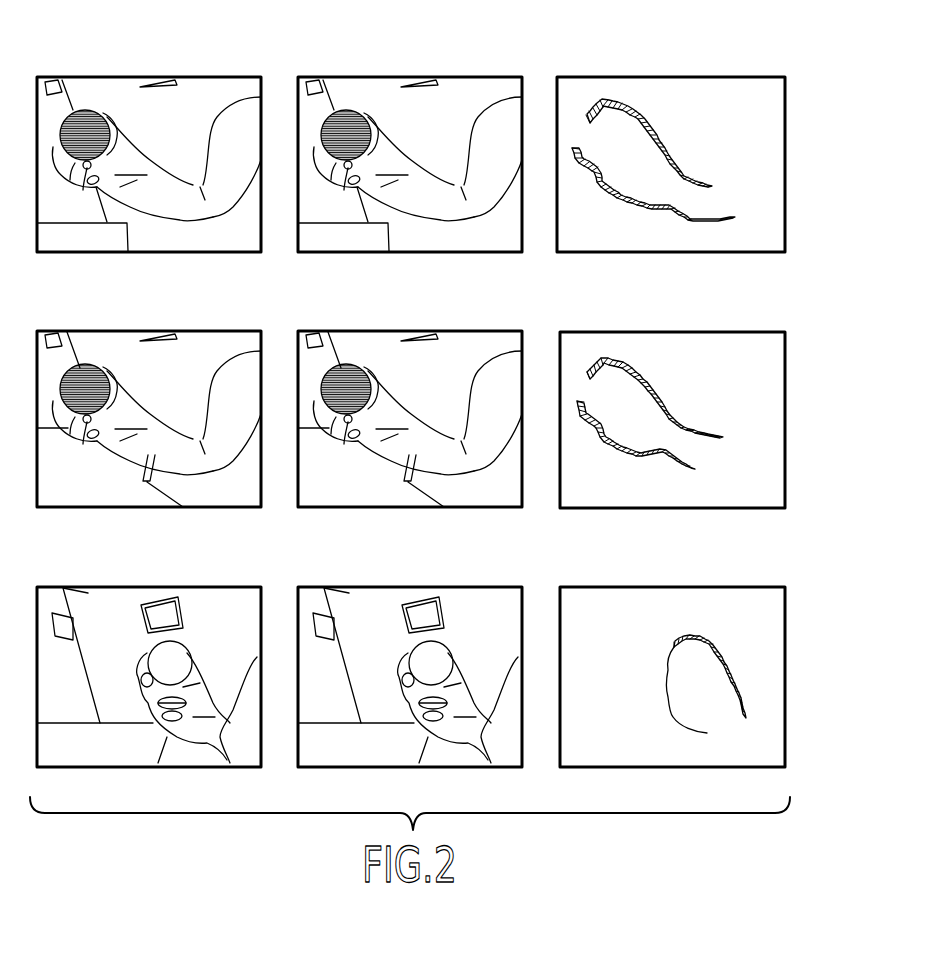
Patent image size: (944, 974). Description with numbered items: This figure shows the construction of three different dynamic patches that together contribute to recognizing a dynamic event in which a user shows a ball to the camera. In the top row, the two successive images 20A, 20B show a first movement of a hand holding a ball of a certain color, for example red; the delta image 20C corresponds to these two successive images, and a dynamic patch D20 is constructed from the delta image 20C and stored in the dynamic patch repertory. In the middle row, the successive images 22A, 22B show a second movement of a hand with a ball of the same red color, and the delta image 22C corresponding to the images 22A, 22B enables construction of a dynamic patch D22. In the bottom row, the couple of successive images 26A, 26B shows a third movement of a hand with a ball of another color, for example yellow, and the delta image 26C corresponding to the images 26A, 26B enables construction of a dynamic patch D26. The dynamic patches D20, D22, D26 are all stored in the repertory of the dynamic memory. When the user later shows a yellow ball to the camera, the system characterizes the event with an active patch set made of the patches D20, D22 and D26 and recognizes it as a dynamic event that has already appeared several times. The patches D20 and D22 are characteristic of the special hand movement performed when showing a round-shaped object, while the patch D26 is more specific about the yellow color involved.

The first successive image of first hand movement 20A is at (155, 77).
The second successive image of first hand movement 20B is at (411, 77).
The delta image of first movement 20C is at (670, 77).
The first successive image of second hand movement 22A is at (153, 331).
The second successive image of second hand movement 22B is at (411, 331).
The delta image of second movement 22C is at (671, 331).
The first successive image of third hand movement 26A is at (151, 587).
The second successive image of third hand movement 26B is at (412, 587).
The delta image of third movement 26C is at (671, 587).
The dynamic patch D20 is at (845, 174).
The dynamic patch D22 is at (845, 431).
The dynamic patch D26 is at (845, 686).